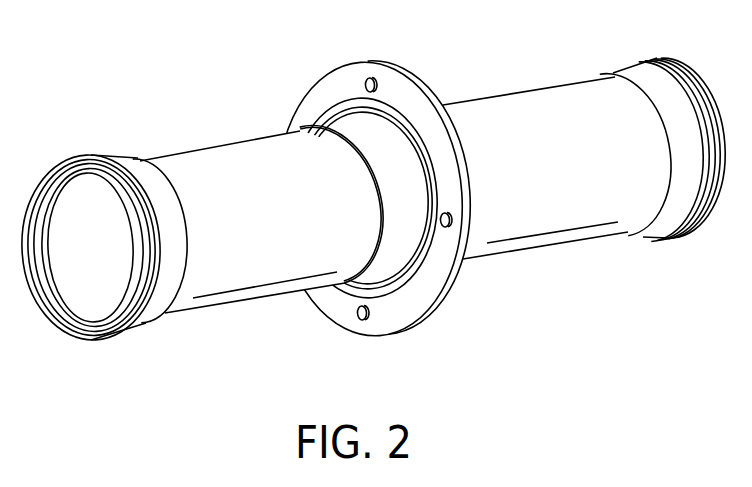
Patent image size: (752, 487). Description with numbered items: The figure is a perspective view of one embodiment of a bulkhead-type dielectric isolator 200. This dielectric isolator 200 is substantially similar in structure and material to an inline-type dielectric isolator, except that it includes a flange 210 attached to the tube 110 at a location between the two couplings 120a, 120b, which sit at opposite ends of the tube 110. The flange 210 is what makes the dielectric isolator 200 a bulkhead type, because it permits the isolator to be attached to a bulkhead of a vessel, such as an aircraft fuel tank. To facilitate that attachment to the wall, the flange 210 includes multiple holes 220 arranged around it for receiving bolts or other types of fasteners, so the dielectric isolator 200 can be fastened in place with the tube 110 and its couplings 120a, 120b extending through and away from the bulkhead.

The dielectric isolator 200 is at (374, 203).
The tube 110 is at (313, 292).
The coupling 120a is at (140, 320).
The coupling 120b is at (675, 237).
The flange 210 is at (374, 175).
The holes 220 is at (369, 78).